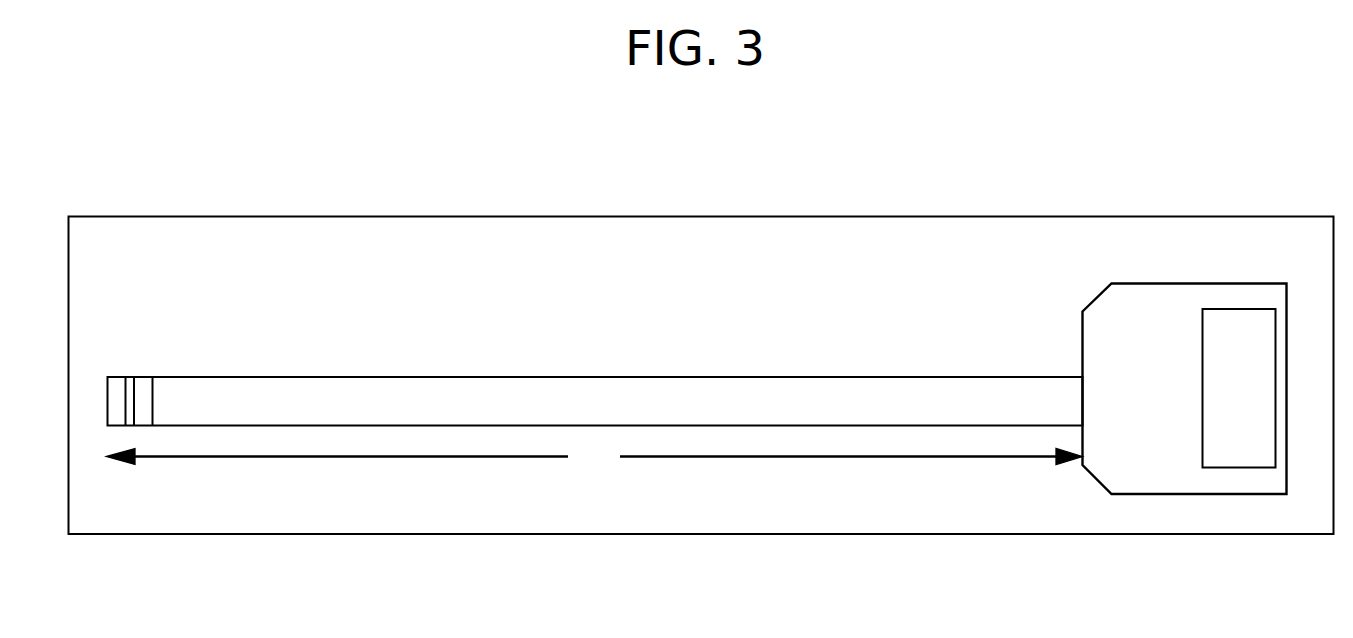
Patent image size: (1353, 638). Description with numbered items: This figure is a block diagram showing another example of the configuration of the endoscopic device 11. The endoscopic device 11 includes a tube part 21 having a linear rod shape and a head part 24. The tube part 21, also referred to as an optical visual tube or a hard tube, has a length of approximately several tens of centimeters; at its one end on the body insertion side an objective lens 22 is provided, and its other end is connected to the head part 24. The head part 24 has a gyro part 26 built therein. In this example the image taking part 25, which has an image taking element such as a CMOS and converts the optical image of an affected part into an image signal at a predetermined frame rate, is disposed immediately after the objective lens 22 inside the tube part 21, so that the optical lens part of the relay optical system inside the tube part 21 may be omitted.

The endoscopic device 11 is at (702, 215).
The tube part 21 is at (595, 426).
The objective lens 22 is at (115, 375).
The head part 24 is at (1100, 298).
The image taking part 25 is at (148, 375).
The gyro part 26 is at (1248, 468).